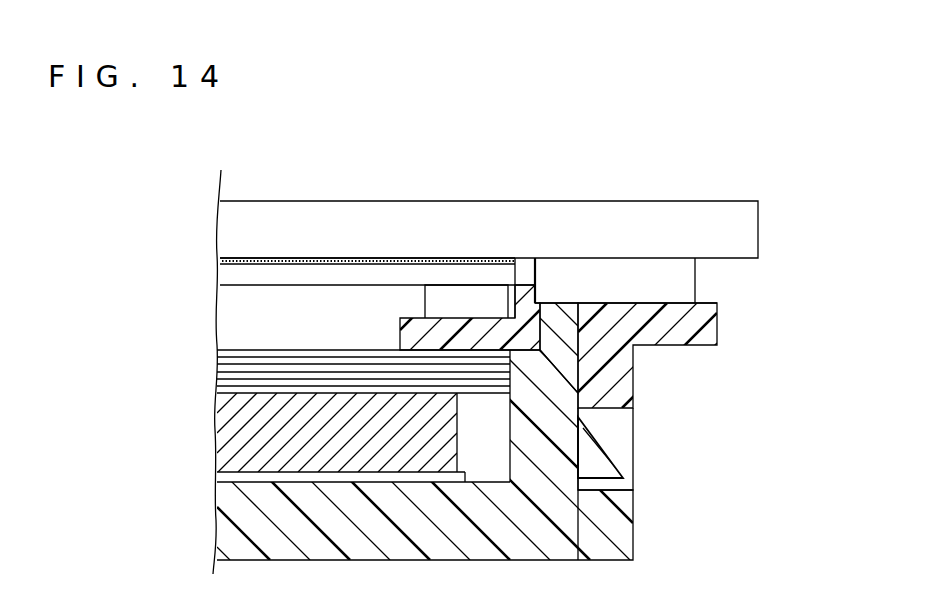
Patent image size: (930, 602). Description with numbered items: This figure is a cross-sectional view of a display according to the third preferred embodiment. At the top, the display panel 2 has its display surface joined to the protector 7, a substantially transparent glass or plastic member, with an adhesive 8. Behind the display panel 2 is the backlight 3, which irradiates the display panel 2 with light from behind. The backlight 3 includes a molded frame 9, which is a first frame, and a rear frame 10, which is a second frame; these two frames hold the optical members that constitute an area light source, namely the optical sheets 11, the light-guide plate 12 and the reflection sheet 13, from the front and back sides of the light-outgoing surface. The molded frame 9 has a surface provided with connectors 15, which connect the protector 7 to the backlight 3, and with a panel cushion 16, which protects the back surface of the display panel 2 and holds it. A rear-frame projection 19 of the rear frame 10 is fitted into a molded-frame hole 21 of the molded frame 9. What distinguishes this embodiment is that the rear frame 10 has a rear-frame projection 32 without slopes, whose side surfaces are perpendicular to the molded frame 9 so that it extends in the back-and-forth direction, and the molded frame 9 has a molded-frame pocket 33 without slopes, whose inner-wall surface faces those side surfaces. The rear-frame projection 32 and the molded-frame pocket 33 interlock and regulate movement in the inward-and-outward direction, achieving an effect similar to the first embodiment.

The display panel 2 is at (230, 276).
The backlight 3 is at (153, 285).
The protector 7 is at (745, 231).
The adhesive 8 is at (222, 261).
The molded frame 9 is at (717, 323).
The rear frame 10 is at (232, 519).
The optical sheets 11 is at (212, 352).
The light-guide plate 12 is at (232, 440).
The reflection sheet 13 is at (232, 481).
The connector 15 is at (686, 285).
The panel cushion 16 is at (470, 302).
The rear-frame projection 19 is at (600, 467).
The molded-frame hole 21 is at (608, 427).
The rear-frame projection 32 is at (563, 328).
The molded-frame pocket 33 is at (563, 303).